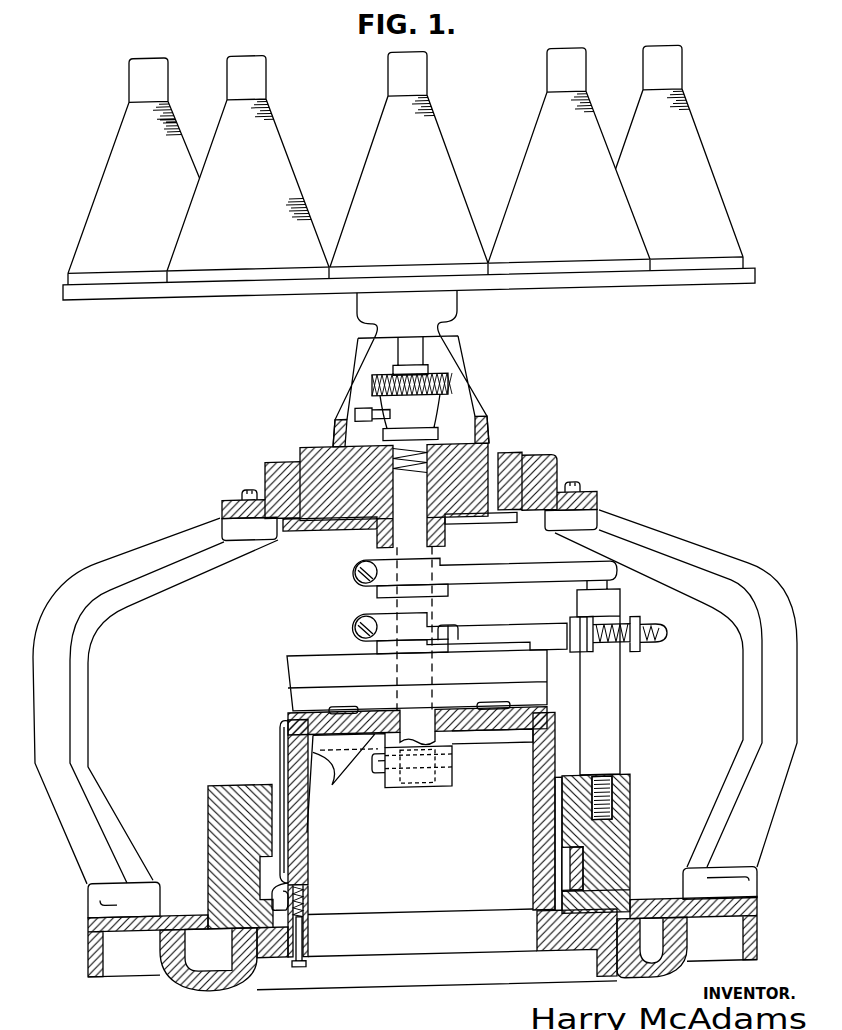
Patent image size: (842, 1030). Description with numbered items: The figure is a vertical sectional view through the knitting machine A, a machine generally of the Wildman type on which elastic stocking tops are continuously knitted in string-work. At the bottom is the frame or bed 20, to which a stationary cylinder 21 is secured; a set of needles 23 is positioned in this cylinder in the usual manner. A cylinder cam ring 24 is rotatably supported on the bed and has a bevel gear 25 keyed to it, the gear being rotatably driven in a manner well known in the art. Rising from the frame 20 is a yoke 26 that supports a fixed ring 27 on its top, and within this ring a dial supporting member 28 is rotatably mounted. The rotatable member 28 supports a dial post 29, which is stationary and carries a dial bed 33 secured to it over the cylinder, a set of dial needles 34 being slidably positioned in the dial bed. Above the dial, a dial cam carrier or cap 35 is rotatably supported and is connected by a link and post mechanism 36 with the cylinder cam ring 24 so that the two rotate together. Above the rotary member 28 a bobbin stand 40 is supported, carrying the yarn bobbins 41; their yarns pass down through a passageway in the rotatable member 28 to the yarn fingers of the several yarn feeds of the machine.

The yarn bobbins 41 is at (540, 178).
The bobbin stand 40 is at (528, 292).
The fixed ring 27 is at (545, 458).
The dial supporting member 28 is at (466, 526).
The yoke 26 is at (660, 541).
The dial post 29 is at (432, 608).
The link and post mechanism 36 is at (605, 616).
The dial cam carrier 35 is at (299, 670).
The dial needles 34 is at (530, 717).
The dial bed 33 is at (481, 742).
The stationary cylinder 21 is at (304, 865).
The needles 23 is at (283, 770).
The cylinder cam ring 24 is at (628, 800).
The frame or bed 20 is at (560, 937).
The bevel gear 25 is at (643, 983).
The machine A is at (279, 950).